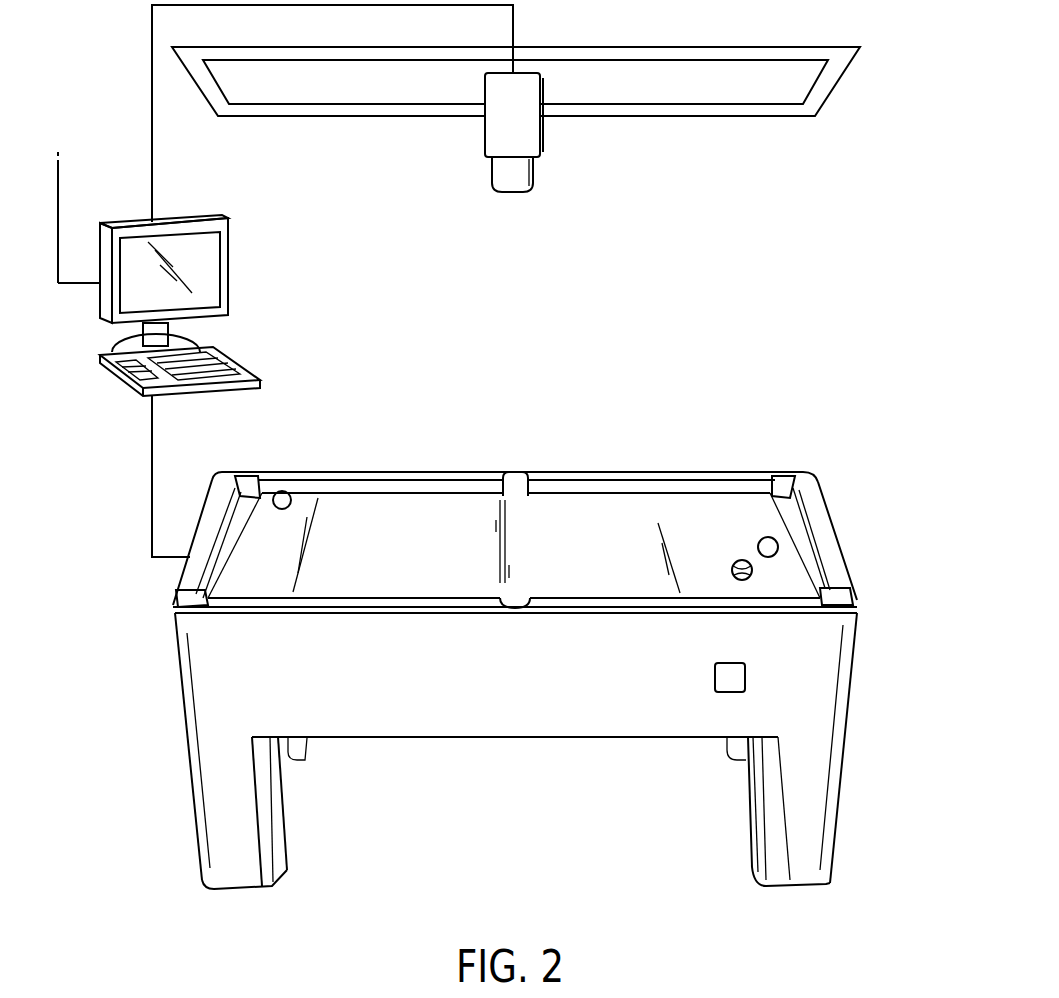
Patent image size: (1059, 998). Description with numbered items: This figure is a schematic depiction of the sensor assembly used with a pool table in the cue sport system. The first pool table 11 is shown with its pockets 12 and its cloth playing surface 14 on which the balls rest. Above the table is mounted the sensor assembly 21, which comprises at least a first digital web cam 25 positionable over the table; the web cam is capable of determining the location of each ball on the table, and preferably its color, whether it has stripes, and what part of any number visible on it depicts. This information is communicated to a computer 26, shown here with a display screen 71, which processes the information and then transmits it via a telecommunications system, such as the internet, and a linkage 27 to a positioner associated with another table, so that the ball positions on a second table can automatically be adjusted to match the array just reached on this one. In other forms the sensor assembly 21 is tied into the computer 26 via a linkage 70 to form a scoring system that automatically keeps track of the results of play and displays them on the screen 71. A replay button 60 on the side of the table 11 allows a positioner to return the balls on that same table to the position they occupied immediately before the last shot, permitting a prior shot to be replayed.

The first pool table 11 is at (515, 643).
The pockets 12 is at (515, 472).
The cloth playing surface 14 is at (421, 544).
The sensor assembly 21 is at (485, 133).
The first digital web cam 25 is at (532, 172).
The computer 26 is at (199, 283).
The linkage 27 is at (60, 206).
The replay button 60 is at (730, 680).
The linkage 70 is at (151, 470).
The screen 71 is at (198, 253).